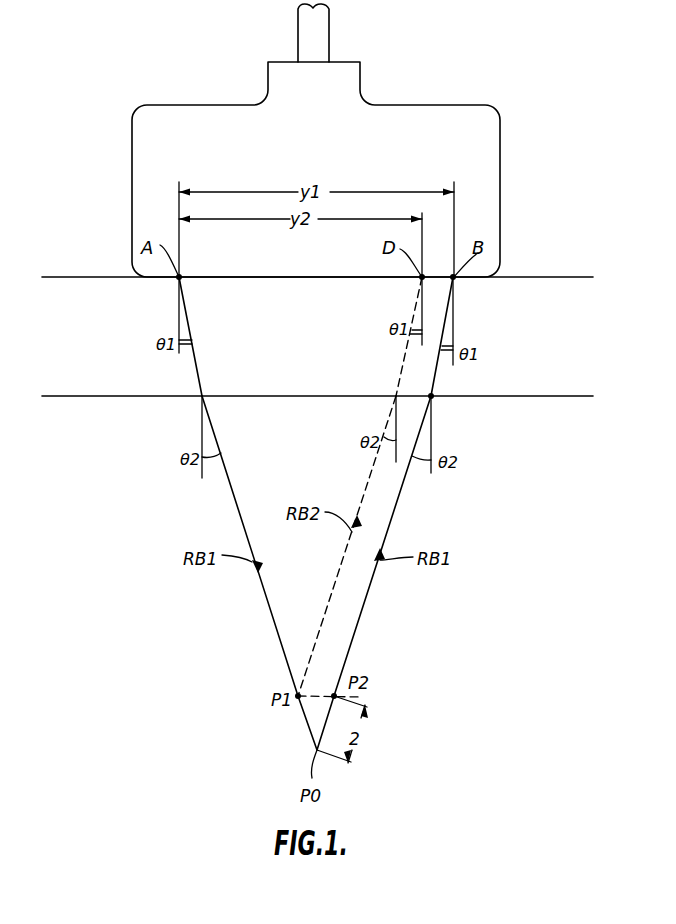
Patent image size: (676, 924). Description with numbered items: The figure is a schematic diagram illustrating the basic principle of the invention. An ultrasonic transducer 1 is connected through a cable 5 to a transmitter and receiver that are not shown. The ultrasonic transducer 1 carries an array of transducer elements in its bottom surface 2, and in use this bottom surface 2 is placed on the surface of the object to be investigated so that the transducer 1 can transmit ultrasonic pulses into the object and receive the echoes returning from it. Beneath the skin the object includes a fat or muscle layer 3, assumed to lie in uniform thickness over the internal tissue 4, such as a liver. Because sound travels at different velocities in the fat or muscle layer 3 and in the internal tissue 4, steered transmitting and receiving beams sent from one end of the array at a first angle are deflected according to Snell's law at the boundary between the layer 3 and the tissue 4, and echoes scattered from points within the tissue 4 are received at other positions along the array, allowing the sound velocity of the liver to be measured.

The ultrasonic transducer 1 is at (492, 134).
The bottom surface 2 is at (308, 277).
The fat or muscle layer 3 is at (380, 336).
The internal tissue 4 is at (317, 573).
The cable 5 is at (325, 27).